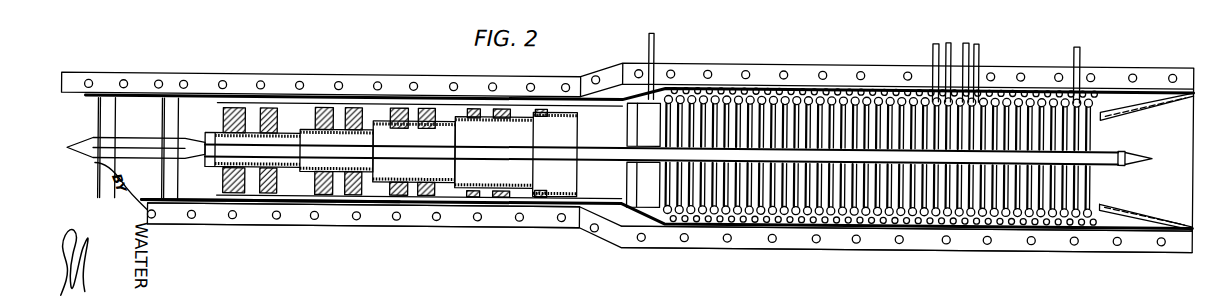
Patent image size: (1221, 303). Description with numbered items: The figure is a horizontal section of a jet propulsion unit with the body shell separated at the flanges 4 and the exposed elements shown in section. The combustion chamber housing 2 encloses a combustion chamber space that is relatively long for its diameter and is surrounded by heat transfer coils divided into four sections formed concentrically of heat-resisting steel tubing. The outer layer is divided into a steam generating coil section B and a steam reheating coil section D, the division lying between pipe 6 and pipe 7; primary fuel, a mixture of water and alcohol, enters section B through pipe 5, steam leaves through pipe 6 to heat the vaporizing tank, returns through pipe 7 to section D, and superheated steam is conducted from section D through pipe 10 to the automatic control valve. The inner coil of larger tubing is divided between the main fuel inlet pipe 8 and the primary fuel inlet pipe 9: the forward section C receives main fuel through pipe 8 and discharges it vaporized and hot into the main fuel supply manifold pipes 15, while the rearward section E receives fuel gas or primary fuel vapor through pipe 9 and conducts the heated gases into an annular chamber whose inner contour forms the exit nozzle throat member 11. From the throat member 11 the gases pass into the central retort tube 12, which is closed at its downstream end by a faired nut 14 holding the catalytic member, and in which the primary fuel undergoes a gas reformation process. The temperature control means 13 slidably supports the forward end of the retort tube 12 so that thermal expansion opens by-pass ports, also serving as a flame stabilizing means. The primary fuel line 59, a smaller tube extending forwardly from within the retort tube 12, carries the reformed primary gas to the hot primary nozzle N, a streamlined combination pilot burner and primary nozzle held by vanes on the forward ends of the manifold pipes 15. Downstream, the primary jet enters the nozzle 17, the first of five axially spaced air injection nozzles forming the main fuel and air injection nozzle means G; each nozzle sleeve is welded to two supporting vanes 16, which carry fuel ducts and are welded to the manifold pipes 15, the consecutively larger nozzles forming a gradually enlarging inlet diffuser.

The primary nozzle N is at (135, 147).
The main fuel and air injection nozzle means G is at (372, 123).
The combustion chamber housing 2 is at (688, 247).
The flanges 4 is at (514, 229).
The pipe 5 is at (652, 38).
The pipe 6 is at (932, 42).
The pipe 7 is at (947, 40).
The main fuel inlet pipe 8 is at (965, 40).
The primary fuel inlet pipe 9 is at (978, 42).
The pipe 10 is at (1076, 43).
The exit nozzle throat member 11 is at (1114, 92).
The retort tube 12 is at (953, 158).
The temperature control means 13 is at (627, 168).
The faired nut 14 is at (1143, 157).
The main fuel supply manifold pipes 15 is at (285, 205).
The supporting vanes 16 is at (324, 197).
The primary nozzle 17 is at (228, 196).
The primary fuel line 59 is at (453, 161).
The steam generating coil section B is at (725, 222).
The forward section of inner coil C is at (840, 221).
The steam reheating coil section D is at (1008, 220).
The rearward section of inner coil E is at (1048, 220).